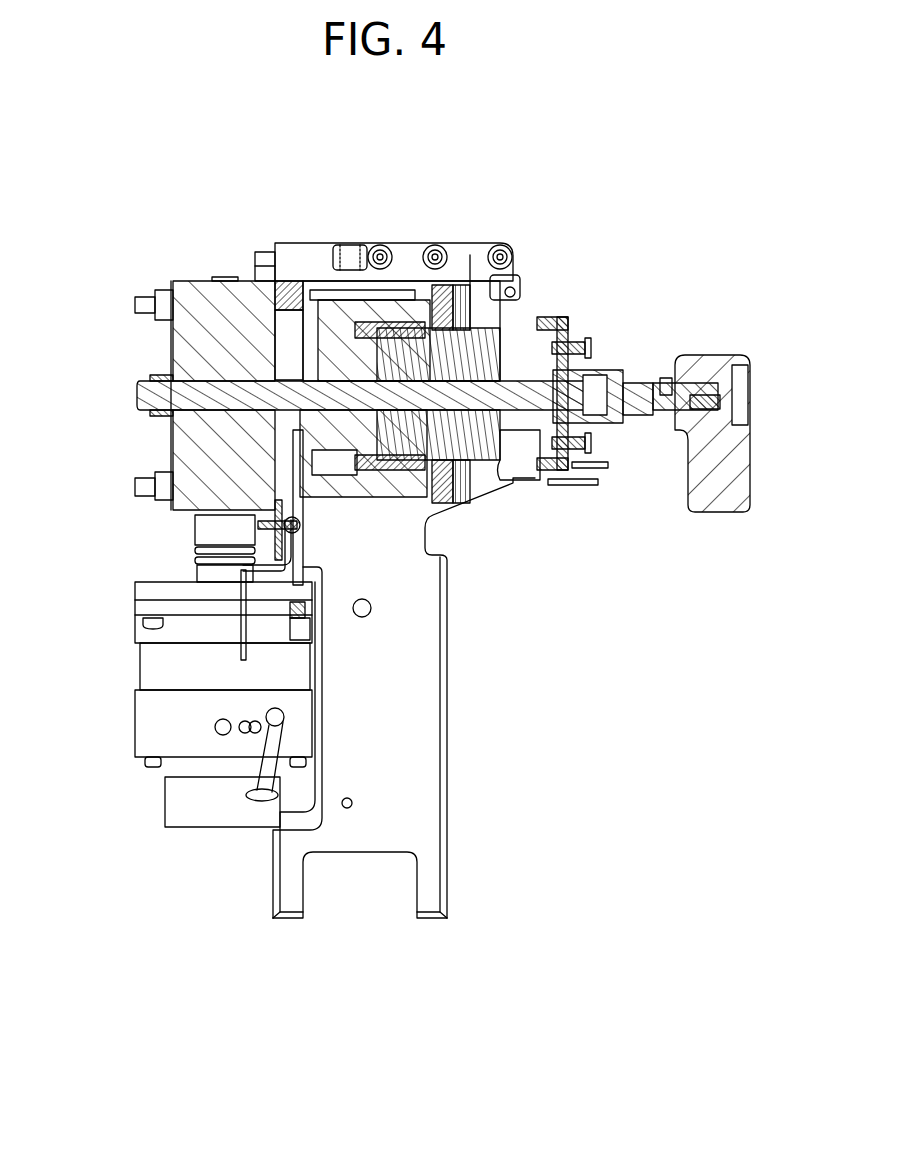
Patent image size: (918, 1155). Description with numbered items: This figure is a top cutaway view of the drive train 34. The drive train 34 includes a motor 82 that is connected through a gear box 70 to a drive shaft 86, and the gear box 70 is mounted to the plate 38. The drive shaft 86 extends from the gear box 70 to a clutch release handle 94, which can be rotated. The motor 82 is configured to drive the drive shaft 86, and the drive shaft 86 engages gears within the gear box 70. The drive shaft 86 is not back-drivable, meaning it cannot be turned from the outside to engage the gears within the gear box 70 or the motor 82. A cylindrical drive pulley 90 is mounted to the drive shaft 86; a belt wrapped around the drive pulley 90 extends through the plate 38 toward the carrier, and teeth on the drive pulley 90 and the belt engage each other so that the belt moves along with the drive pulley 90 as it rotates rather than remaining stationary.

The drive train 34 is at (710, 167).
The plate 38 is at (420, 803).
The gear box 70 is at (203, 283).
The motor 82 is at (146, 740).
The drive shaft 86 is at (590, 395).
The drive pulley 90 is at (328, 310).
The clutch release handle 94 is at (740, 462).